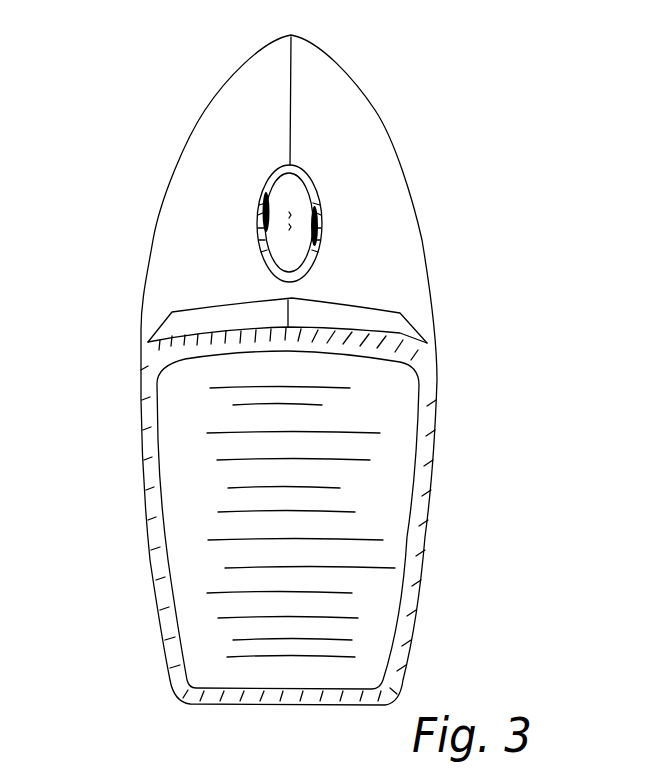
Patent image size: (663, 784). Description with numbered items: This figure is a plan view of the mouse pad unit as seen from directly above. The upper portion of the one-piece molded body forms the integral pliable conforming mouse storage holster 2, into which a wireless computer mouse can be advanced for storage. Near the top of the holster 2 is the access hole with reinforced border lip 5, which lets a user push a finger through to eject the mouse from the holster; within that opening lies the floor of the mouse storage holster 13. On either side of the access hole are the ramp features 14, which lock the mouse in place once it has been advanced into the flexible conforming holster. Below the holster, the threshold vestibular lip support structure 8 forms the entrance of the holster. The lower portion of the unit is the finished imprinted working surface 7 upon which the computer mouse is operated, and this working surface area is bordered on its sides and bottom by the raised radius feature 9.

The integral pliable conforming mouse storage holster 2 is at (227, 127).
The access hole with reinforced border lip 5 is at (318, 205).
The floor of mouse storage holster 13 is at (287, 203).
The ramp feature 14 is at (260, 223).
The threshold vestibular lip support structure 8 is at (356, 320).
The raised radius feature 9 is at (325, 342).
The finished imprinted working surface 7 is at (252, 553).